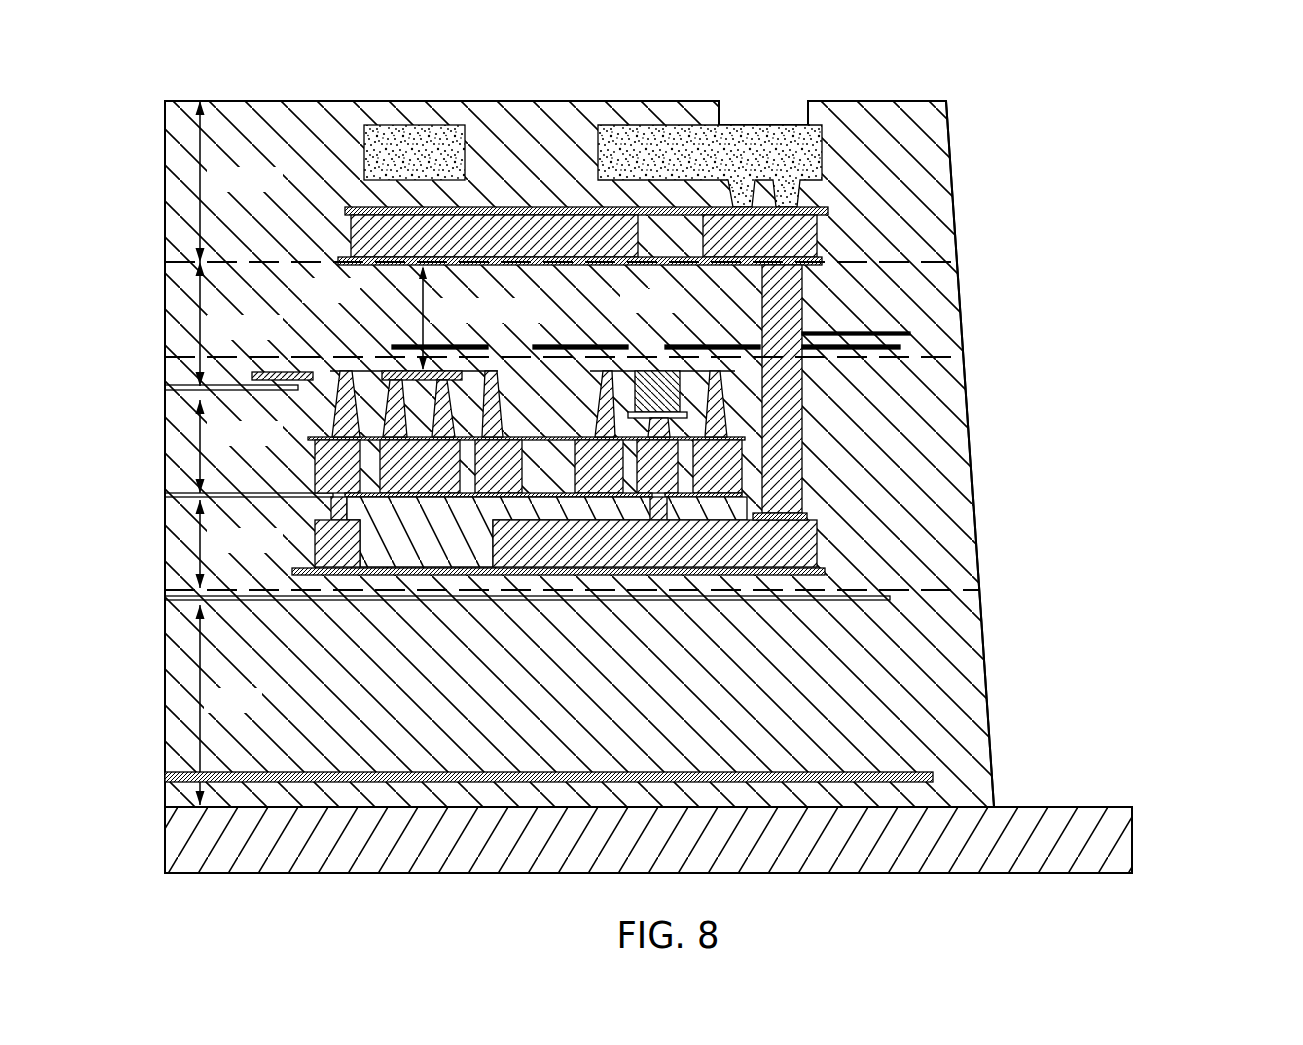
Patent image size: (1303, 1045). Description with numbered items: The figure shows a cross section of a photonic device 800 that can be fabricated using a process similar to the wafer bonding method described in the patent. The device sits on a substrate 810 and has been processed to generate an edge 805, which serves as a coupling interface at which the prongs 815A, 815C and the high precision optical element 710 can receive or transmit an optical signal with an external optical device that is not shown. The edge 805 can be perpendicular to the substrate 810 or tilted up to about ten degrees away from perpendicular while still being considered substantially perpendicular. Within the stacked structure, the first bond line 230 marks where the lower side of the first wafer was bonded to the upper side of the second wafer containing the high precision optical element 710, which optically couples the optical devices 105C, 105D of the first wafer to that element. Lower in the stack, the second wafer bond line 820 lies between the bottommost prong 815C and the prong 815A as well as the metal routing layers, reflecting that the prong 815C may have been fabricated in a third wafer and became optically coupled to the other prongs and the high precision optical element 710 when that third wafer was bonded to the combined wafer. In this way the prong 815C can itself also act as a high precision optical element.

The photonic device 800 is at (988, 118).
The high precision optical element 710 is at (867, 337).
The first bond line 230 is at (923, 358).
The second wafer bond line 820 is at (910, 589).
The edge 805 is at (1020, 752).
The substrate 810 is at (1118, 838).
The prong 815A is at (181, 497).
The prong 815C is at (182, 601).
The transistor 105C is at (387, 350).
The transistor 105D is at (657, 358).